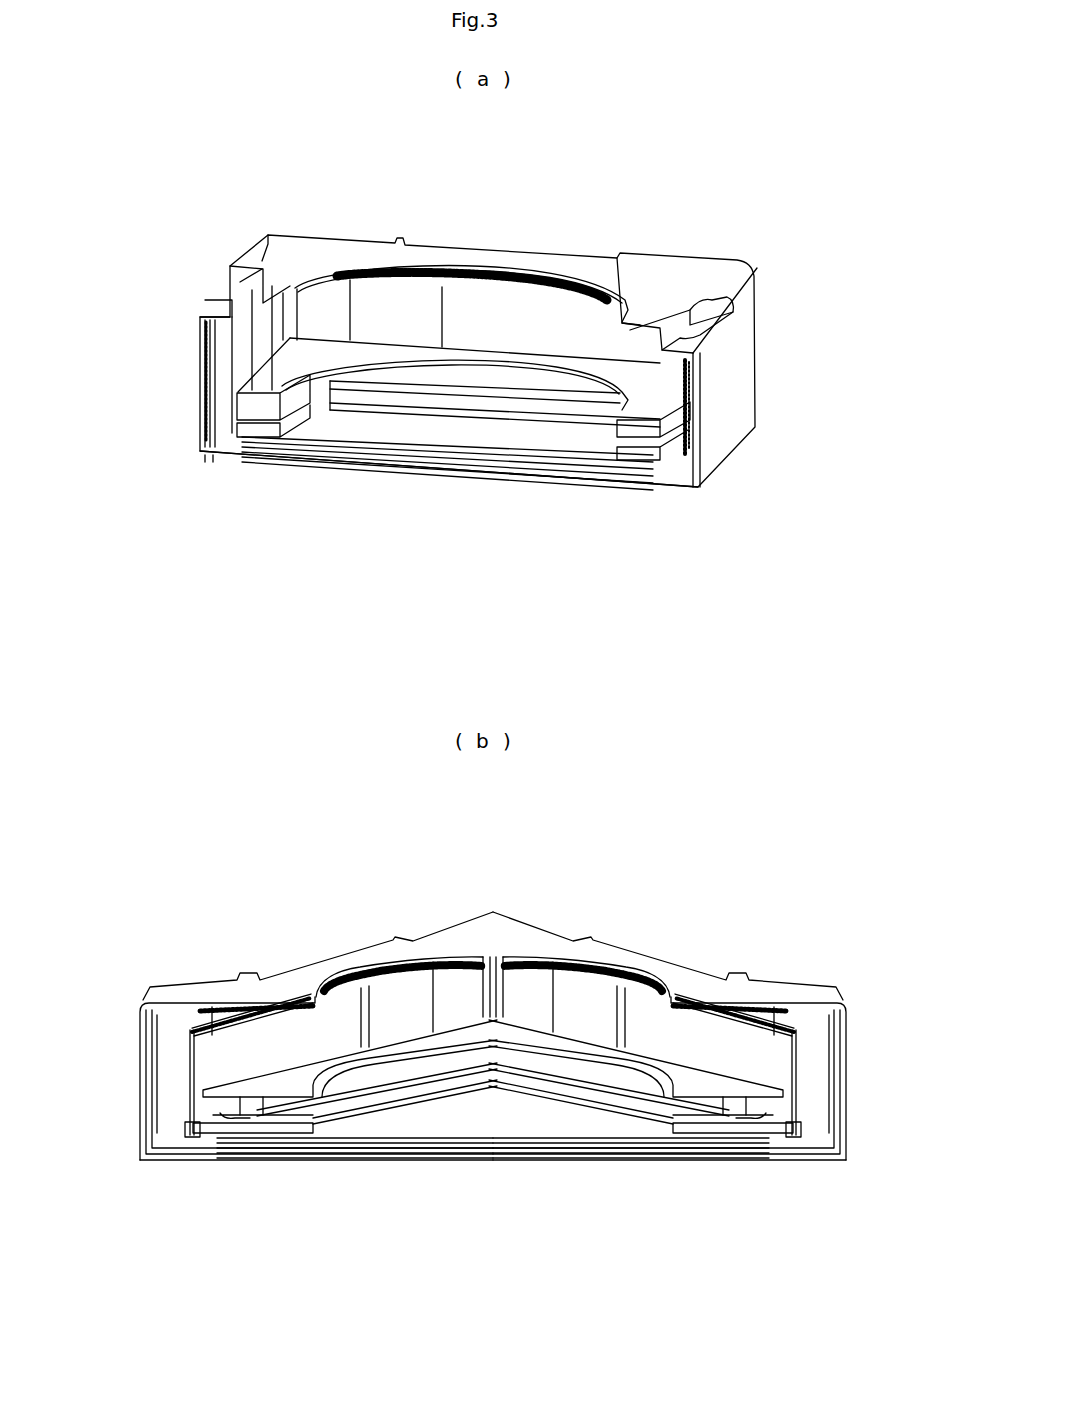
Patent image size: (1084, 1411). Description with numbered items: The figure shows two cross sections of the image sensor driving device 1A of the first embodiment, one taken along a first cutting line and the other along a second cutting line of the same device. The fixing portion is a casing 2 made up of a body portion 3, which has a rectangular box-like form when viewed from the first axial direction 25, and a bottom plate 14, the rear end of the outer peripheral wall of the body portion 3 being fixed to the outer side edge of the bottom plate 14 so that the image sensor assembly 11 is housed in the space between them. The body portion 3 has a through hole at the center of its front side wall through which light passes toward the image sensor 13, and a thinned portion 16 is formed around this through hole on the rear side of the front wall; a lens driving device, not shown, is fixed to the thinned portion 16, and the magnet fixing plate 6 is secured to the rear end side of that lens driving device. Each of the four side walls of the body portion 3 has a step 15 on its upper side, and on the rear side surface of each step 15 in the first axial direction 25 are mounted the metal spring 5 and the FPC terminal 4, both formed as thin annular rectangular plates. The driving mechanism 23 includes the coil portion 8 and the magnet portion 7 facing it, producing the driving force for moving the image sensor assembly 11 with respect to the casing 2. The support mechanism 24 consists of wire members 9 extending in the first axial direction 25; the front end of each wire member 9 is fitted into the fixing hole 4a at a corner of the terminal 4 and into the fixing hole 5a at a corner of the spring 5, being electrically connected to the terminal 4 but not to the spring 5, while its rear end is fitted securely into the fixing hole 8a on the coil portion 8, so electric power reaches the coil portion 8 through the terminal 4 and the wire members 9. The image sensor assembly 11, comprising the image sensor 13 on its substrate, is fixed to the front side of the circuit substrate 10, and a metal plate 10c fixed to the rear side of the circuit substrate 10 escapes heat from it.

The image sensor driving device 1A is at (118, 138).
The casing 2 is at (266, 228).
The body portion 3 is at (297, 250).
The terminal 4 is at (205, 334).
The spring 5 is at (693, 367).
The fixing hole 4a is at (188, 1024).
The fixing hole 5a is at (800, 1024).
The magnet fixing plate 6 is at (313, 352).
The magnet portion 7 is at (247, 438).
The coil portion 8 is at (262, 445).
The fixing hole 8a is at (187, 1127).
The wire member 9 is at (190, 1057).
The circuit substrate 10 is at (478, 310).
The metal plate 10c is at (594, 462).
The image sensor assembly 11 is at (430, 430).
The image sensor 13 is at (462, 437).
The bottom plate 14 is at (663, 493).
The step 15 is at (450, 255).
The thinned portion 16 is at (240, 282).
The driving mechanism 23 is at (295, 535).
The support mechanism 24 is at (904, 953).
The first axial direction 25 is at (87, 292).